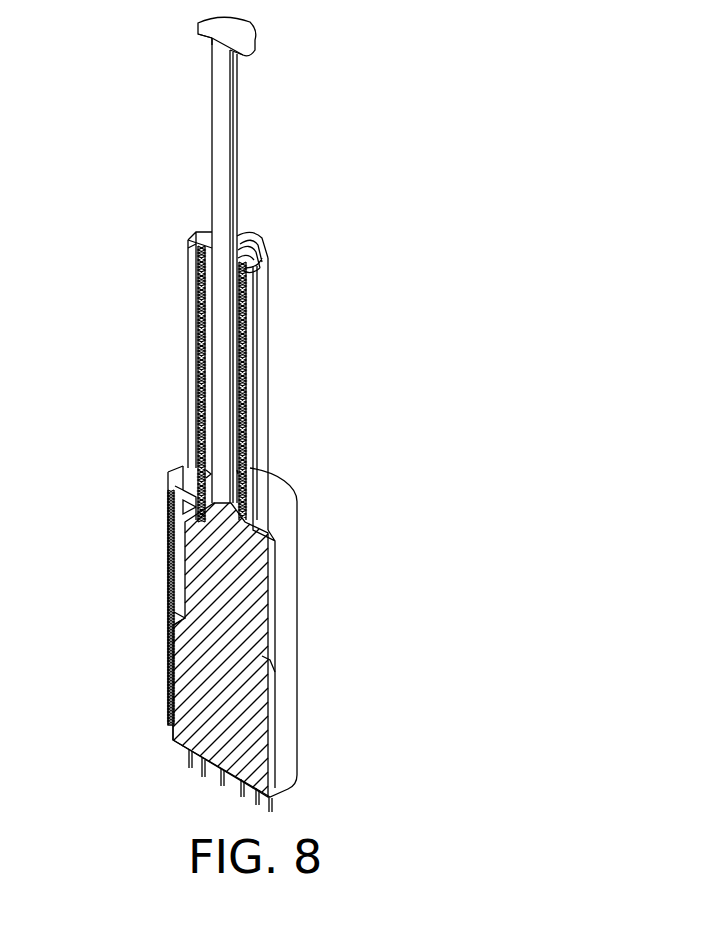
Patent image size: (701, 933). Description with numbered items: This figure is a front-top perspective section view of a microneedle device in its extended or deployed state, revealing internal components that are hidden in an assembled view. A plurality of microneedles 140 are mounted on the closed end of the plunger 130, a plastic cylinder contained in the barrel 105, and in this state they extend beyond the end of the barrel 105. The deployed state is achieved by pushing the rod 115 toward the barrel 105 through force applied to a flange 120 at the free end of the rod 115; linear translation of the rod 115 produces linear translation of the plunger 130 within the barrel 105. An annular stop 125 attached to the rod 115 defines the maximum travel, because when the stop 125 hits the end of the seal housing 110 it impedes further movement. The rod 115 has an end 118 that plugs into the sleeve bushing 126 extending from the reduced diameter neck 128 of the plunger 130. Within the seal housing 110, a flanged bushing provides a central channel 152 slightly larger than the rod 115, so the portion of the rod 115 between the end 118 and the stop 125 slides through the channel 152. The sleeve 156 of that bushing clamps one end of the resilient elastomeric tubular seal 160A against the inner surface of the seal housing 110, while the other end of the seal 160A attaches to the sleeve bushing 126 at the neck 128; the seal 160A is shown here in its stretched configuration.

The barrel 105 is at (290, 638).
The seal housing 110 is at (258, 368).
The rod 115 is at (222, 133).
The end 118 is at (222, 470).
The flange 120 is at (198, 25).
The annular stop 125 is at (255, 238).
The sleeve bushing 126 is at (215, 508).
The neck 128 is at (190, 568).
The plunger 130 is at (188, 672).
The microneedles 140 is at (175, 757).
The central channel 152 is at (266, 251).
The sleeve 156 is at (205, 287).
The resilient elastomeric tubular seal 160A is at (185, 362).